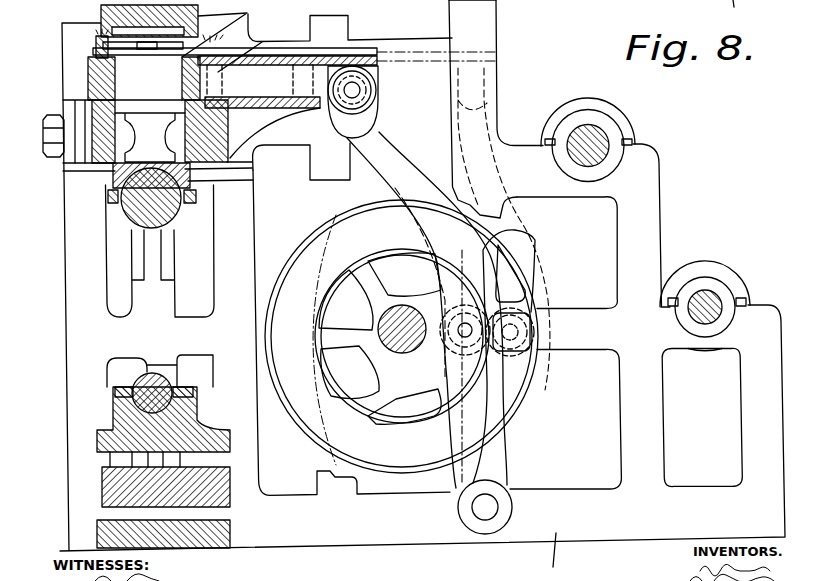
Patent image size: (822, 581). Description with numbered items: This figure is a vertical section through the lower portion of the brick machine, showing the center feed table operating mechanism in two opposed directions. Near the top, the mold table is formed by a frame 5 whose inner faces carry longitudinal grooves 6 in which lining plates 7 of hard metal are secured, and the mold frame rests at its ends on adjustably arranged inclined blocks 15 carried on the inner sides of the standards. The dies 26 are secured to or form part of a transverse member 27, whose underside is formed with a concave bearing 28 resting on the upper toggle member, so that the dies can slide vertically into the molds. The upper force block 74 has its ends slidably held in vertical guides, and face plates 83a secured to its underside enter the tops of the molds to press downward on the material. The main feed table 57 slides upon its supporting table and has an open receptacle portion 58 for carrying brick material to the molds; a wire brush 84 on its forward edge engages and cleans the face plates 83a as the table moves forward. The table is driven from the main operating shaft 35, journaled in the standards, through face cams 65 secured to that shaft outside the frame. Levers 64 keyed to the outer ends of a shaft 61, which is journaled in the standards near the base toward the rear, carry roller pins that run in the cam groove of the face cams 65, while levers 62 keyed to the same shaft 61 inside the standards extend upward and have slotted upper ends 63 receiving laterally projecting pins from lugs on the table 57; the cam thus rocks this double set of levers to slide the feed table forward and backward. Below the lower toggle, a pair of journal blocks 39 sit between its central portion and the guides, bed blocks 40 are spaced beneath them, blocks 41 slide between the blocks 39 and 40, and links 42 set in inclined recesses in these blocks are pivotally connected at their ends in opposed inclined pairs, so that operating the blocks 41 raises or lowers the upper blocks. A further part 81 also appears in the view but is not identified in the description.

The upper force block 74 is at (62, 23).
The wire brush 84 is at (113, 38).
The dies 26 is at (127, 103).
The frame 5 is at (77, 100).
The longitudinal grooves 6 is at (112, 133).
The inclined blocks 15 is at (97, 180).
The lining plates 7 is at (127, 200).
The transverse member 27 is at (115, 213).
The concave bearing 28 is at (108, 225).
The journal blocks 39 is at (107, 445).
The blocks 41 is at (100, 492).
The bed blocks 40 is at (223, 543).
The links 42 is at (225, 10).
The face plates 83a is at (234, 36).
The open receptacle portion 58 is at (254, 38).
The main feed table 57 is at (377, 54).
The slotted upper ends 63 is at (370, 118).
The levers 62 is at (457, 228).
The face cams 65 is at (422, 418).
The main operating shaft 35 is at (405, 330).
The levers 64 is at (483, 458).
The shaft 61 is at (491, 515).
The frame upright 81 is at (502, 7).